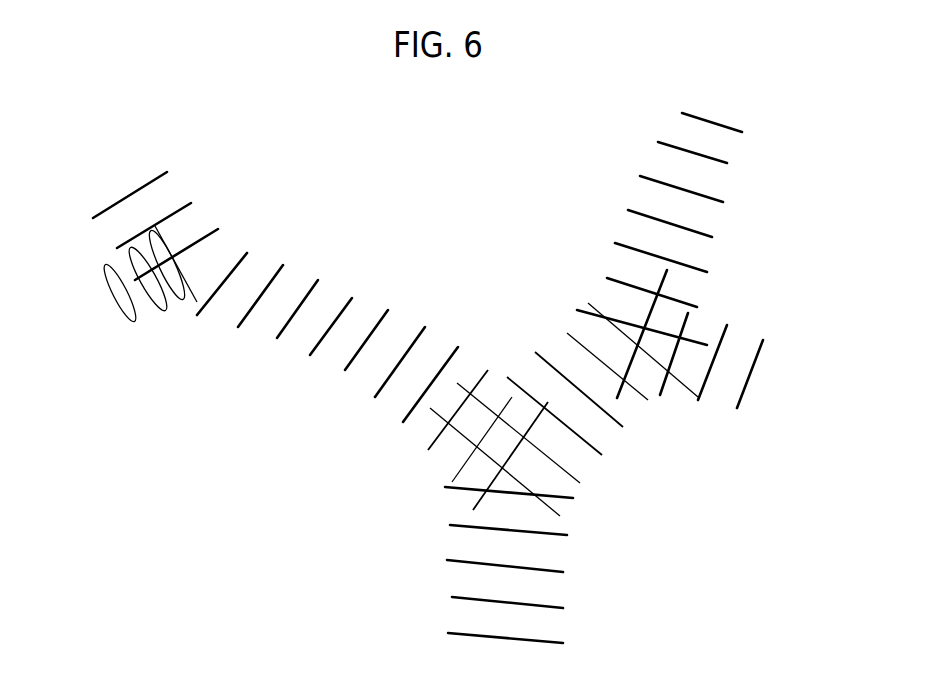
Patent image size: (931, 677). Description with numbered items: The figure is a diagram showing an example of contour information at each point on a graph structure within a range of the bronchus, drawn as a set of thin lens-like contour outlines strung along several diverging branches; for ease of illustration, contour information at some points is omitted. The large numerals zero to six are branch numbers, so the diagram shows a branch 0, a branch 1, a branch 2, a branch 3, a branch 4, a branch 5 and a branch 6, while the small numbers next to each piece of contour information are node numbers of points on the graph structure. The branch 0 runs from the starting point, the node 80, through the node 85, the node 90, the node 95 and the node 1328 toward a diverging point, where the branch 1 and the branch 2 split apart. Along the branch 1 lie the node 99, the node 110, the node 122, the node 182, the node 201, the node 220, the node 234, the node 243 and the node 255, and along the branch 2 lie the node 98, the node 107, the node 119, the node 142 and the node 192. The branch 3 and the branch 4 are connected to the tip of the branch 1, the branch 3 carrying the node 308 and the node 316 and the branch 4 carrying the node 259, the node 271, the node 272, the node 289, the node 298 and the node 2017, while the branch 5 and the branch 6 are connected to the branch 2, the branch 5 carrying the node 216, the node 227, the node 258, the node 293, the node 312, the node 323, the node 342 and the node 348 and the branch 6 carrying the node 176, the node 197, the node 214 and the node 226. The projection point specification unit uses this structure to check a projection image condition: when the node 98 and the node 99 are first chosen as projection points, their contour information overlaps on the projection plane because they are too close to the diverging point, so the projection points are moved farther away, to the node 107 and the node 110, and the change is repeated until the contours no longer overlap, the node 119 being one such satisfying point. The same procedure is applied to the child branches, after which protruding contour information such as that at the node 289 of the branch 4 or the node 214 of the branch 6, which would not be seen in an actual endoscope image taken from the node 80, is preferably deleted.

The branch 0 is at (505, 561).
The branch 1 is at (345, 331).
The branch 2 is at (540, 424).
The branch 3 is at (149, 193).
The branch 4 is at (173, 289).
The branch 5 is at (650, 248).
The branch 6 is at (699, 343).
The node 80 is at (505, 632).
The node 85 is at (507, 597).
The node 90 is at (505, 561).
The node 95 is at (508, 524).
The node 98 is at (495, 462).
The node 99 is at (509, 456).
The node 107 is at (518, 433).
The node 110 is at (482, 439).
The node 119 is at (554, 416).
The node 122 is at (458, 410).
The node 142 is at (579, 389).
The node 176 is at (760, 374).
The node 182 is at (430, 384).
The node 192 is at (607, 366).
The node 197 is at (721, 362).
The node 201 is at (397, 362).
The node 214 is at (682, 354).
The node 216 is at (628, 343).
The node 220 is at (362, 340).
The node 226 is at (641, 343).
The node 227 is at (642, 322).
The node 234 is at (326, 326).
The node 243 is at (293, 309).
The node 255 is at (258, 296).
The node 258 is at (652, 286).
The node 259 is at (120, 304).
The node 271 is at (148, 284).
The node 272 is at (222, 284).
The node 289 is at (171, 275).
The node 293 is at (661, 252).
The node 298 is at (176, 261).
The node 308 is at (154, 224).
The node 312 is at (670, 218).
The node 316 is at (130, 193).
The node 323 is at (681, 184).
The node 342 is at (692, 147).
The node 348 is at (712, 115).
The lens element 1328 is at (488, 488).
The lens element 2017 is at (189, 245).